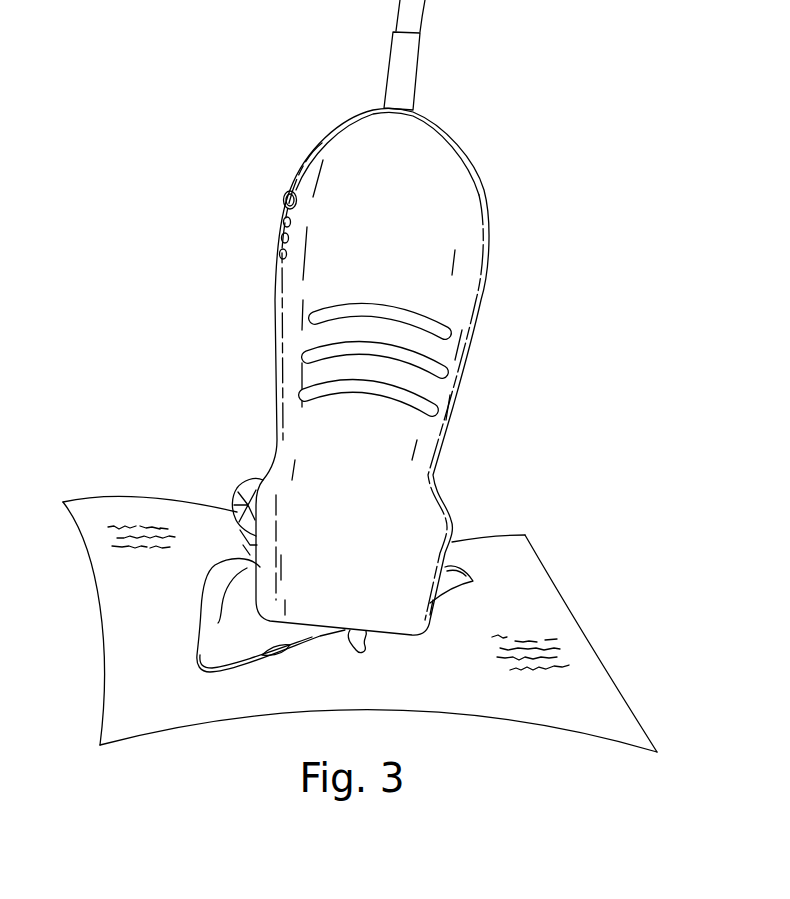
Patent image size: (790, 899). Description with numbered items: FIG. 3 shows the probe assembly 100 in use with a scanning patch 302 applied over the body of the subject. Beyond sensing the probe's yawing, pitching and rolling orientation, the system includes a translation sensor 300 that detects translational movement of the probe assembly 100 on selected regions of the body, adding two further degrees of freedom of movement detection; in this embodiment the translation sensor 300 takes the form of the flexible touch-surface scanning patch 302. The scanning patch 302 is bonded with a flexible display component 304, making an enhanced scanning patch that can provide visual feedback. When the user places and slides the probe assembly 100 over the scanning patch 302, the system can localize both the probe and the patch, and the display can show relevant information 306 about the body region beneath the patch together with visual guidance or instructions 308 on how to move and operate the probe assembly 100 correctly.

The probe assembly 100 is at (482, 197).
The translation sensor 300 is at (571, 569).
The scanning patch 302 is at (617, 687).
The flexible display component 304 is at (222, 570).
The relevant information 306 is at (203, 633).
The visual guidance or instructions 308 is at (135, 528).